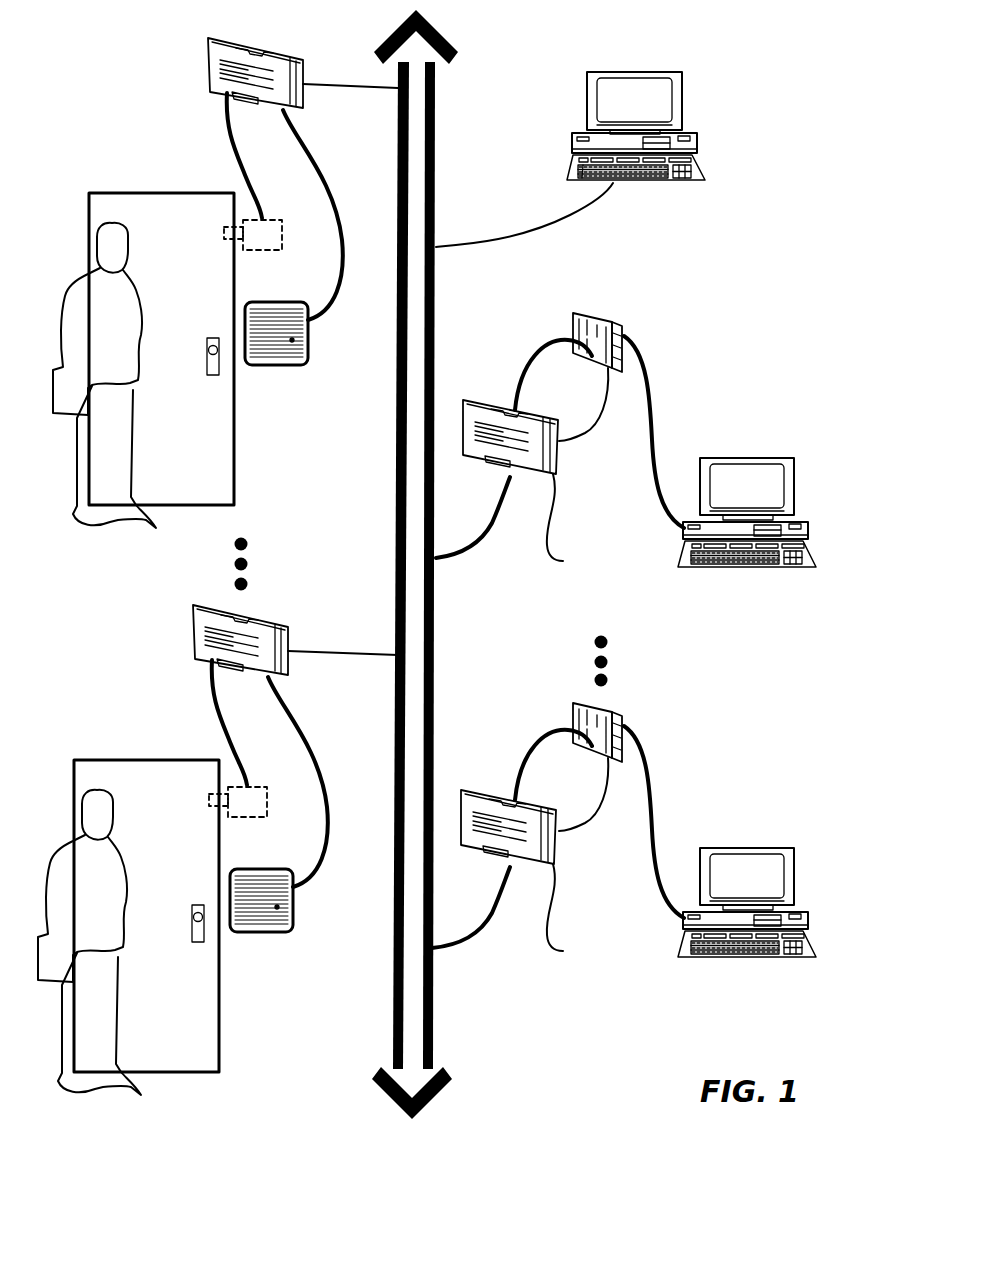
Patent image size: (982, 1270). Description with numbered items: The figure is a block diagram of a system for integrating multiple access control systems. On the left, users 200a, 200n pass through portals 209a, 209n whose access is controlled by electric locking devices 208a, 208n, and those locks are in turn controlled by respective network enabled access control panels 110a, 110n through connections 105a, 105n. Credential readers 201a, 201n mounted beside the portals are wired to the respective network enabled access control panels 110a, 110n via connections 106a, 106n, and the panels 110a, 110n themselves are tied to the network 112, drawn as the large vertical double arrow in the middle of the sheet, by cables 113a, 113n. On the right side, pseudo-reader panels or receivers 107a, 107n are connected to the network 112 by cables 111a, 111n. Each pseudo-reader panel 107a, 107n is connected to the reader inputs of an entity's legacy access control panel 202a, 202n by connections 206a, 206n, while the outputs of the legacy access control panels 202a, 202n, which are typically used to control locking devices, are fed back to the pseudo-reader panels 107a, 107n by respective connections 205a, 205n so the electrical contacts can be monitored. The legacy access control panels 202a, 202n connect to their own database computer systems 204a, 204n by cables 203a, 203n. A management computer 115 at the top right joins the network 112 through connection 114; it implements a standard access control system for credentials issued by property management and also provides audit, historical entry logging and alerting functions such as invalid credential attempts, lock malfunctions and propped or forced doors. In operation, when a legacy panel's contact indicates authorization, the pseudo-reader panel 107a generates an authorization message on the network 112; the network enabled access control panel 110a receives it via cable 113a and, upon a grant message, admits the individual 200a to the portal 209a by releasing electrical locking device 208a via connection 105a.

The network enabled access control panel 110a is at (208, 54).
The network enabled access control panel 110n is at (201, 640).
The connection 105a is at (236, 152).
The connection 105n is at (180, 722).
The connection 106a is at (350, 177).
The connection 106n is at (317, 782).
The cable 113a is at (360, 86).
The cable 113n is at (343, 676).
The network 112 is at (436, 143).
The connection 114 is at (487, 240).
The management computer 115 is at (600, 72).
The portal 209a is at (158, 192).
The portal 209n is at (134, 898).
The user 200a is at (130, 506).
The user 200n is at (121, 945).
The electric locking device 208a is at (282, 248).
The electric locking device 208n is at (261, 821).
The credential reader 201a is at (275, 365).
The credential reader 201n is at (285, 919).
The legacy access control panel 202a is at (622, 323).
The legacy access control panel 202n is at (645, 726).
The cable 203a is at (660, 440).
The cable 203n is at (680, 822).
The database computer system 204a is at (700, 568).
The database computer system 204n is at (747, 922).
The connection 205a is at (546, 345).
The connection 205n is at (530, 754).
The connection 206a is at (590, 418).
The connection 206n is at (570, 794).
The pseudo-reader panel 107a is at (583, 523).
The pseudo-reader panel 107n is at (584, 913).
The cable 111a is at (492, 523).
The cable 111n is at (509, 898).